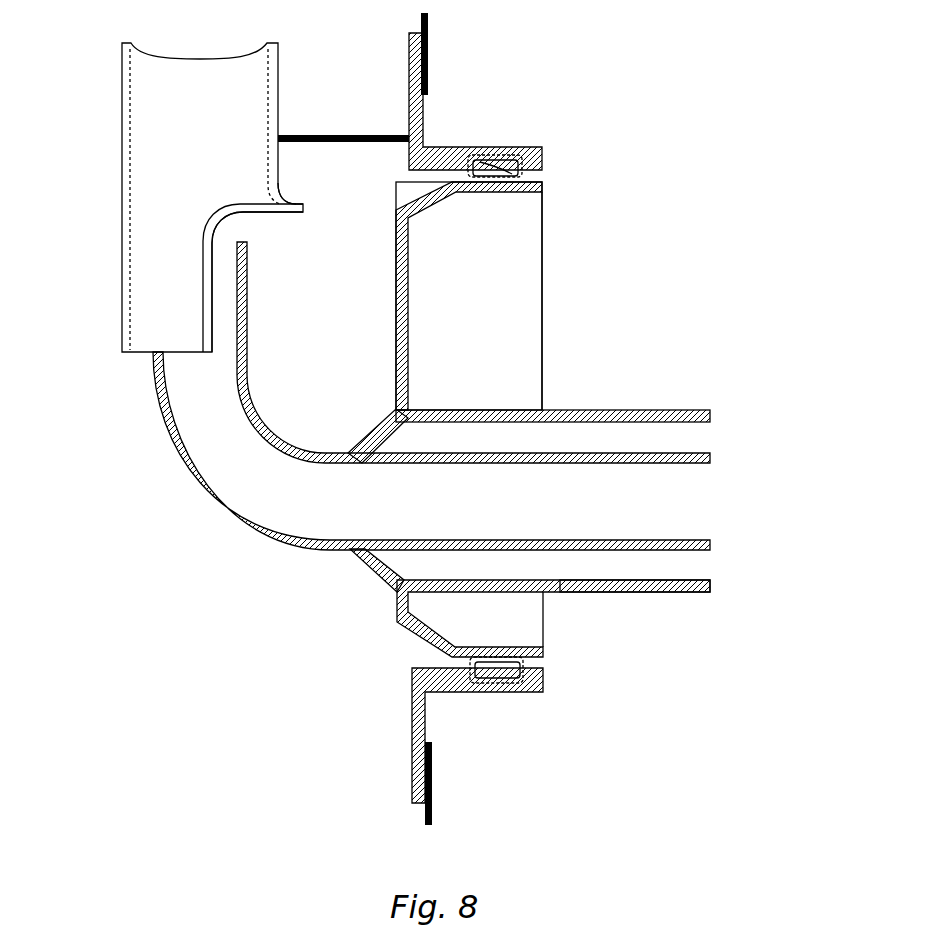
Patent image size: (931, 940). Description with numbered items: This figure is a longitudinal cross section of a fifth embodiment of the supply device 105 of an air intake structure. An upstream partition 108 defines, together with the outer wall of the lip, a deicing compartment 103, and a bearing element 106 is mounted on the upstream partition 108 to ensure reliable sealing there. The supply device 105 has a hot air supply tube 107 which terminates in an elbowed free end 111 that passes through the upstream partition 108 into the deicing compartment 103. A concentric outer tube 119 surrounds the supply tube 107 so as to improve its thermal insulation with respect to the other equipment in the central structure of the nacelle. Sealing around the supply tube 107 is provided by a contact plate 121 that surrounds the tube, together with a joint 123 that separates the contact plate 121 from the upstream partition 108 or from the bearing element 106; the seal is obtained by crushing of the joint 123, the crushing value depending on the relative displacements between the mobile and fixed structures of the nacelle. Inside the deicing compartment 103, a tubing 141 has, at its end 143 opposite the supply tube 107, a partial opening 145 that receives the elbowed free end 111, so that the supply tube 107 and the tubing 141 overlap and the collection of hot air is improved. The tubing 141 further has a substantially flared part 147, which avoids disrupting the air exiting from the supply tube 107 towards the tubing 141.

The deicing compartment 103 is at (84, 113).
The supply device 105 is at (619, 232).
The bearing element 106 is at (415, 117).
The hot air supply tube 107 is at (681, 553).
The upstream partition 108 is at (425, 36).
The elbowed free end 111 is at (248, 292).
The concentric outer tube 119 is at (617, 591).
The contact plate 121 is at (396, 260).
The joint 123 is at (530, 173).
The tubing 141 is at (157, 167).
The end 143 is at (131, 356).
The partial opening 145 is at (243, 211).
The flared part 147 is at (285, 196).